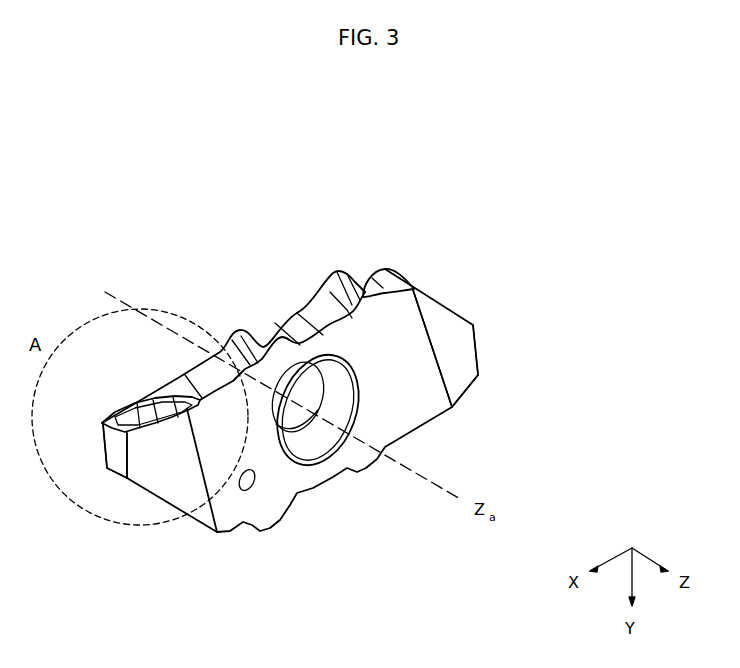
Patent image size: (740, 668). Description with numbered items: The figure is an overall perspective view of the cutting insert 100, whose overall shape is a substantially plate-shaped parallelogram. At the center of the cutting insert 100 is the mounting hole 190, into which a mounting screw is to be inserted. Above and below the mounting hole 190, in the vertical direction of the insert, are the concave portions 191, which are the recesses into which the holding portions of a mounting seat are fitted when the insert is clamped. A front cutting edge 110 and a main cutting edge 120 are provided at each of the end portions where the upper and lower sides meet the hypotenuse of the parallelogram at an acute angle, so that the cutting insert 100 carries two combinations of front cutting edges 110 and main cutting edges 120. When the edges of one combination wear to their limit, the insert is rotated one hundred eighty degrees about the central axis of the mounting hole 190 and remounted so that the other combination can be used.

The cutting insert 100 is at (90, 217).
The front cutting edge 110 is at (99, 439).
The main cutting edge 120 is at (157, 429).
The mounting hole 190 is at (316, 426).
The concave portions 191 is at (293, 288).